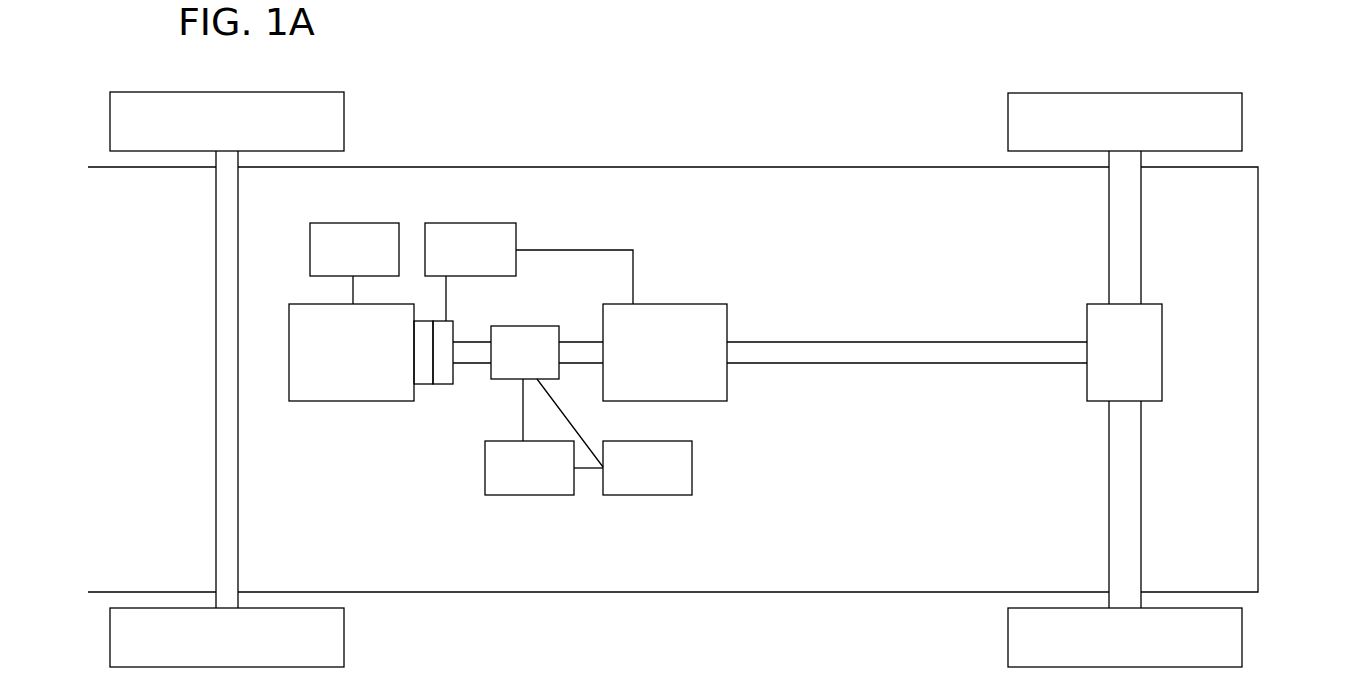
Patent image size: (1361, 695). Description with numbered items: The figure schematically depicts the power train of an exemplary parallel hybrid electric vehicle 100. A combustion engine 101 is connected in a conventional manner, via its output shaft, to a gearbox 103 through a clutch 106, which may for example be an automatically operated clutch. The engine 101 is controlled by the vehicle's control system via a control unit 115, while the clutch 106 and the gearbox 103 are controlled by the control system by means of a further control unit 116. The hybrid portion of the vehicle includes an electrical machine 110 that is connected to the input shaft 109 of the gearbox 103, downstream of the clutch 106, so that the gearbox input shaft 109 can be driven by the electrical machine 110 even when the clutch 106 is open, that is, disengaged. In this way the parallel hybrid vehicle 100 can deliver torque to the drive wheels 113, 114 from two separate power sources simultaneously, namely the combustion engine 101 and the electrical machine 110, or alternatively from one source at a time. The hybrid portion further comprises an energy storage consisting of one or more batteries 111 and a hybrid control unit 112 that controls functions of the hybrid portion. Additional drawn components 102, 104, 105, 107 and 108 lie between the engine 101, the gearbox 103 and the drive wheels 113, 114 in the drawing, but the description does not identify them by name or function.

The hybrid electric vehicle 100 is at (628, 72).
The combustion engine 101 is at (323, 388).
The clutch 102 is at (428, 385).
The gearbox 103 is at (667, 315).
The axle 104 is at (1128, 223).
The axle 105 is at (1135, 512).
The clutch 106 is at (443, 385).
The propeller shaft 107 is at (1003, 358).
The differential 108 is at (1157, 345).
The input shaft 109 is at (572, 355).
The electrical machine 110 is at (535, 333).
The batteries 111 is at (510, 458).
The hybrid control unit 112 is at (647, 458).
The drive wheel 113 is at (1237, 113).
The drive wheel 114 is at (1237, 640).
The control unit 115 is at (353, 260).
The control unit 116 is at (502, 238).